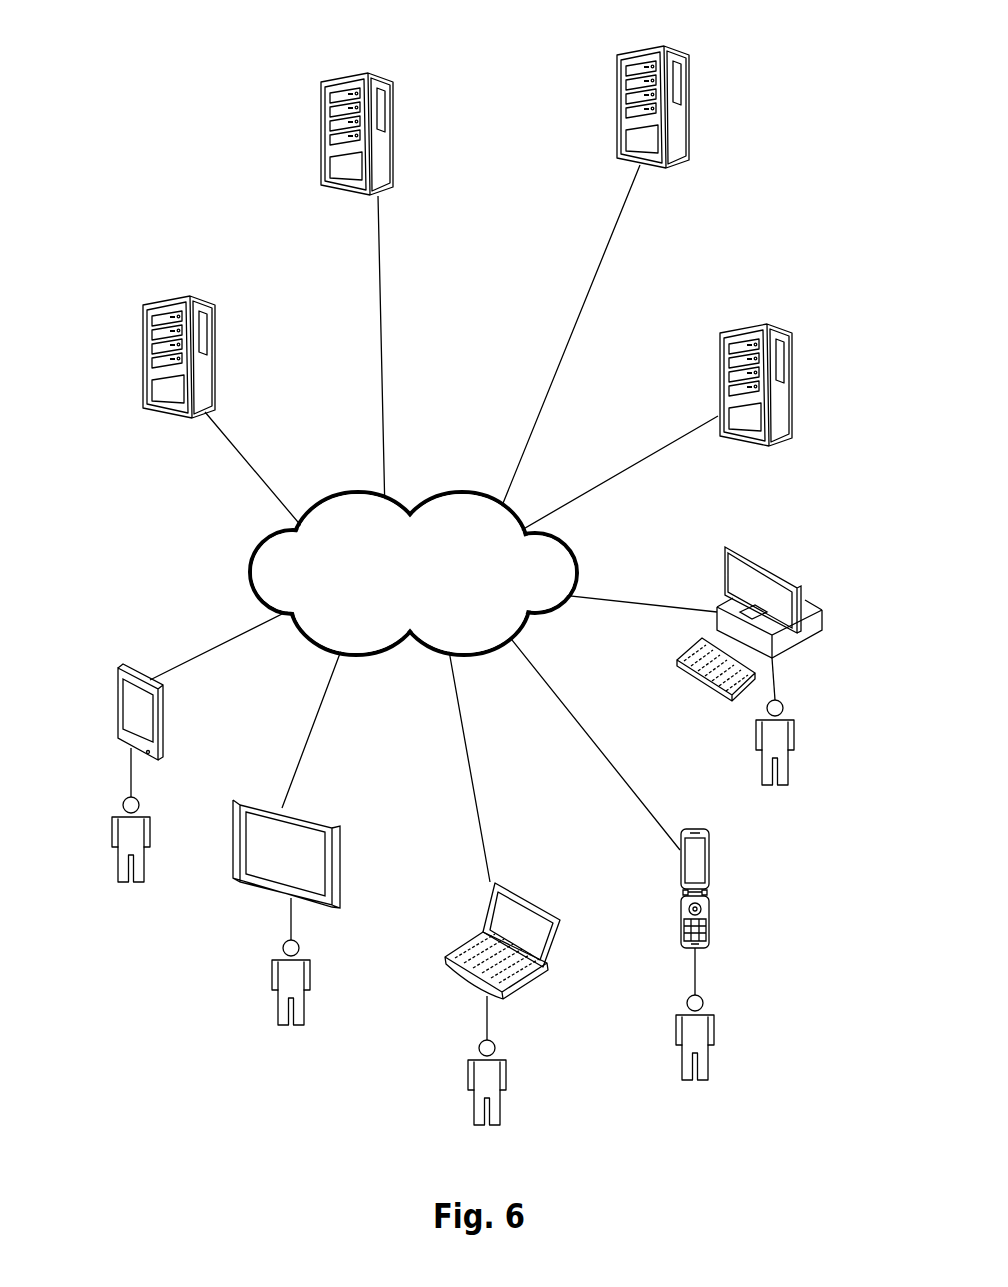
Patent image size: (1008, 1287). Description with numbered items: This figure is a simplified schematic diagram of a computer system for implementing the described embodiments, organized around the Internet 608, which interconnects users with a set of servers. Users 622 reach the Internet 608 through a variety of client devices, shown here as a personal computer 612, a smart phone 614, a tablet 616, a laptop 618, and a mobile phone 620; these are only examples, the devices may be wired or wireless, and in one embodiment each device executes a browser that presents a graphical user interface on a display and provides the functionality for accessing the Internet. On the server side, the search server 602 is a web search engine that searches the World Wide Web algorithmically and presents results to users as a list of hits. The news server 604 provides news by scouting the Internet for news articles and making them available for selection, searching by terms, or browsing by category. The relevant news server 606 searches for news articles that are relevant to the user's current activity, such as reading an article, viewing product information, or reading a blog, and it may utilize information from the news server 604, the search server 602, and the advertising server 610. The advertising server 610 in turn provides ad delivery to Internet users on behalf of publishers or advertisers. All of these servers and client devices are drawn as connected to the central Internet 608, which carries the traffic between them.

The search server 602 is at (152, 372).
The news server 604 is at (677, 121).
The relevant news server 606 is at (385, 147).
The Internet 608 is at (262, 568).
The advertising server 610 is at (778, 412).
The personal computer 612 is at (805, 629).
The smart phone 614 is at (145, 716).
The tablet 616 is at (313, 851).
The laptop 618 is at (535, 940).
The mobile phone 620 is at (700, 860).
The users 622 is at (140, 878).